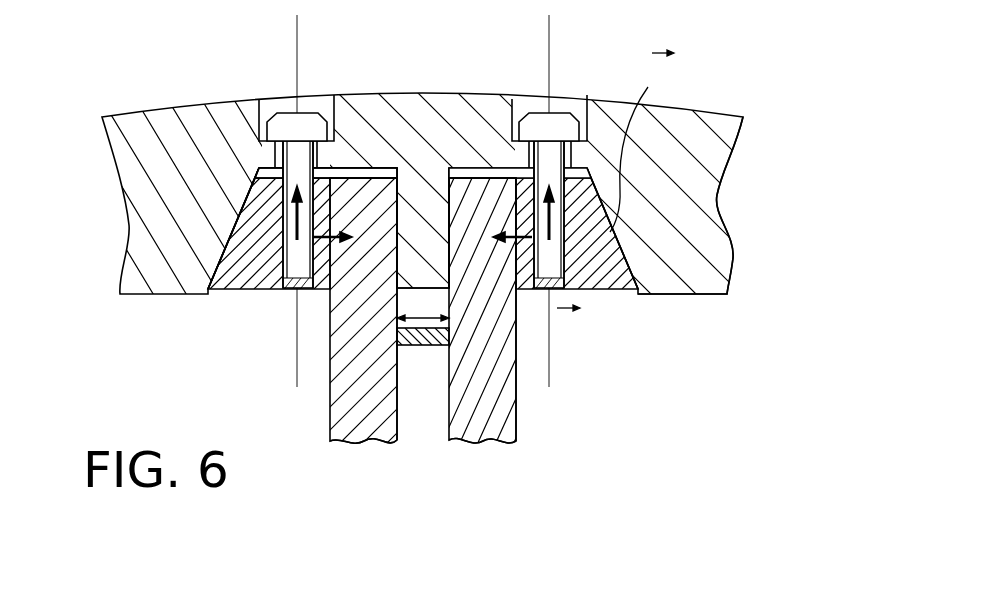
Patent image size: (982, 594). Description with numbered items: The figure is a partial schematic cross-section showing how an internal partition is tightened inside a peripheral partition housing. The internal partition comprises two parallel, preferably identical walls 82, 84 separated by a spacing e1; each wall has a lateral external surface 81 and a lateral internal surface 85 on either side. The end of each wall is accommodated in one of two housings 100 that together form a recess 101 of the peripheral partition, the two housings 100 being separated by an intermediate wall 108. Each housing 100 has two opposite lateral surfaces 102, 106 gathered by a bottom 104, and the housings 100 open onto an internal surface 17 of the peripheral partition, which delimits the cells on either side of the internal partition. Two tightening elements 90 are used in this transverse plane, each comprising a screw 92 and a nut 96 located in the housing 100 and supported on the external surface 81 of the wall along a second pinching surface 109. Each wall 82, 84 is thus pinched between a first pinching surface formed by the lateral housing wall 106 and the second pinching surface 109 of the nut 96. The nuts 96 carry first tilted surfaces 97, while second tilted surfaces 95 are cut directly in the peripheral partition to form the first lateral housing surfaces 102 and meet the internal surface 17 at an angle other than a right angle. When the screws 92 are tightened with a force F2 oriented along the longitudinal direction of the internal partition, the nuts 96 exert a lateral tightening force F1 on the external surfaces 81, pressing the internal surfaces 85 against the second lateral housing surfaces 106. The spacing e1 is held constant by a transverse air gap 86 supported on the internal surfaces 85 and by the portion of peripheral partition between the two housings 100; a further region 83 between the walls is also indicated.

The internal surface 17 is at (692, 295).
The lateral external surface 81 is at (331, 415).
The parallel wall 82 is at (363, 433).
The space between plates and body 83 is at (377, 168).
The parallel wall 84 is at (497, 430).
The lateral internal surface 85 is at (402, 427).
The transverse air gap 86 is at (428, 346).
The tightening element 90 is at (308, 98).
The screw 92 is at (320, 155).
The second tilted surface 95 is at (222, 258).
The nut 96 is at (261, 272).
The first tilted surface 97 is at (233, 290).
The housing 100 is at (288, 343).
The recess 101 is at (228, 180).
The first lateral housing surface 102 is at (223, 213).
The housing bottom 104 is at (262, 168).
The second lateral housing surface 106 is at (395, 183).
The intermediate wall 108 is at (418, 240).
The second pinching surface 109 is at (317, 355).
The spacing e1 is at (423, 306).
The lateral tightening force F1 is at (569, 323).
The tightening force F2 is at (644, 141).